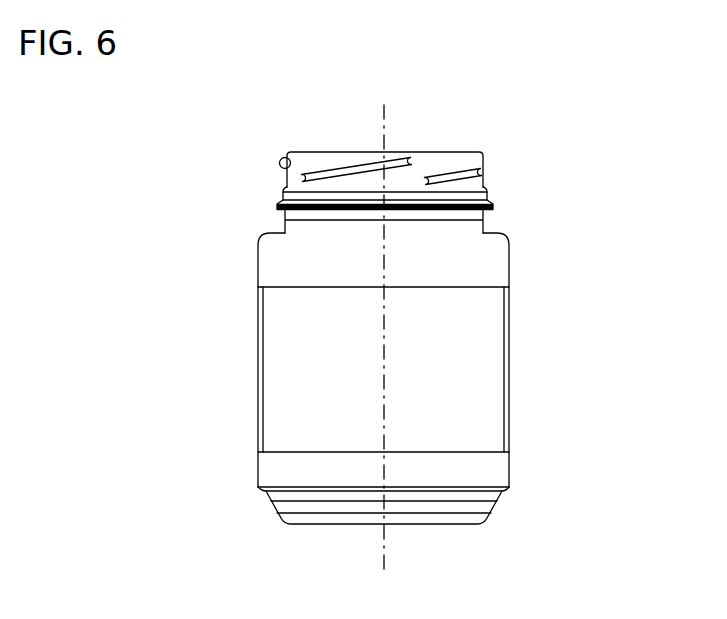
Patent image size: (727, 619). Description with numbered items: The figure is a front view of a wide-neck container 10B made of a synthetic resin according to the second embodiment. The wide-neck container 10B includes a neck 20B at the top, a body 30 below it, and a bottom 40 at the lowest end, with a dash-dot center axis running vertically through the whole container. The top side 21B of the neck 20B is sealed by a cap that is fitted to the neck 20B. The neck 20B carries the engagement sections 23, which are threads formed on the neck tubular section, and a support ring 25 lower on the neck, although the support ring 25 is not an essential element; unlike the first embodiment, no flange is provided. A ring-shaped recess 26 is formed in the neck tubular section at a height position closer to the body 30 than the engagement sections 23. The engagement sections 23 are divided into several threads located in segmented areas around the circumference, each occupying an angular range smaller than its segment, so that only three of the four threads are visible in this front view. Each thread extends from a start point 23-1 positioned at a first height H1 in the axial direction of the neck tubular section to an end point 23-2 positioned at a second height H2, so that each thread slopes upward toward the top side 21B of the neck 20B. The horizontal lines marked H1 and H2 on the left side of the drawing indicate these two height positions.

The wide-neck container 10B is at (503, 111).
The neck 20B is at (256, 215).
The top side 21B is at (440, 152).
The engagement sections 23 is at (488, 172).
The start point 23-1 is at (301, 175).
The end point 23-2 is at (409, 158).
The support ring 25 is at (495, 207).
The ring-shaped recess 26 is at (482, 197).
The body 30 is at (500, 360).
The bottom 40 is at (420, 525).
The first height H1 is at (287, 184).
The second height H2 is at (287, 158).